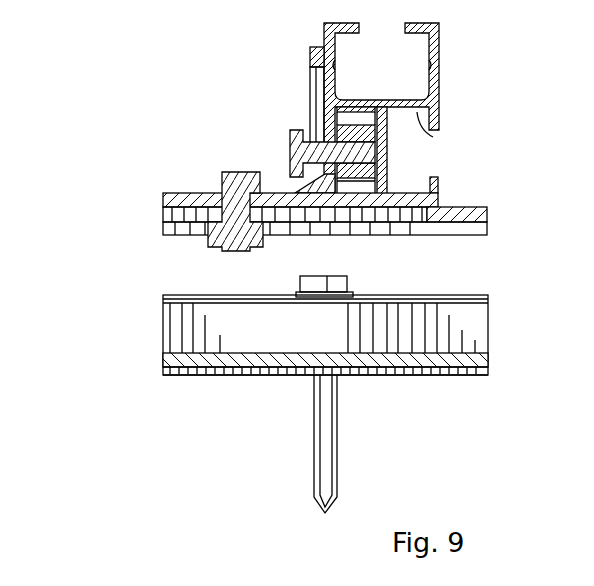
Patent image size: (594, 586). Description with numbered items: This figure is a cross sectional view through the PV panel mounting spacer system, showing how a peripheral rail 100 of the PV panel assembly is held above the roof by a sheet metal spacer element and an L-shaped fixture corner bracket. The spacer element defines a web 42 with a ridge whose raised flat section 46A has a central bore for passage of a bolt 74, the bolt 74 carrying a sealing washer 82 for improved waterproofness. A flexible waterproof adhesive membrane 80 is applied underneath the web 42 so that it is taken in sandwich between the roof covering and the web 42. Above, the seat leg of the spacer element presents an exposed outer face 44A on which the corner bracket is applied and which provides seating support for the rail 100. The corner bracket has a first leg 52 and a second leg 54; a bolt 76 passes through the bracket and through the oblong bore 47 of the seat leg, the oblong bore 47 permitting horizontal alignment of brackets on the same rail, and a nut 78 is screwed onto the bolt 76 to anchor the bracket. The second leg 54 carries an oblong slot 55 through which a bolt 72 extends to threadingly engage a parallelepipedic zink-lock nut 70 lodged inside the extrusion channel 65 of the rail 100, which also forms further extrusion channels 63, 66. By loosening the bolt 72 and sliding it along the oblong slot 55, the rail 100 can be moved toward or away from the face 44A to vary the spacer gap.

The PV panel assembly peripheral rail 100 is at (452, 62).
The extrusion channel 63 is at (390, 76).
The second leg 54 is at (309, 50).
The oblong slot 55 is at (316, 90).
The extrusion channel 66 is at (440, 130).
The zink-lock nut 70 is at (389, 148).
The extrusion channel 65 is at (390, 190).
The bolt 72 is at (291, 142).
The first leg 52 is at (163, 200).
The oblong bore 47 is at (352, 215).
The exposed outer face 44A is at (480, 207).
The nut 78 is at (165, 234).
The bolt 76 is at (222, 180).
The raised flat section 46A is at (163, 300).
The web 42 is at (163, 358).
The flexible waterproof adhesive membrane 80 is at (192, 373).
The sealing washer 82 is at (347, 282).
The bolt 74 is at (328, 465).